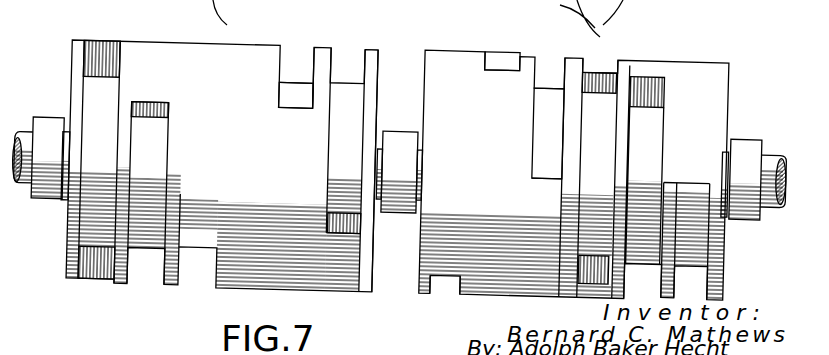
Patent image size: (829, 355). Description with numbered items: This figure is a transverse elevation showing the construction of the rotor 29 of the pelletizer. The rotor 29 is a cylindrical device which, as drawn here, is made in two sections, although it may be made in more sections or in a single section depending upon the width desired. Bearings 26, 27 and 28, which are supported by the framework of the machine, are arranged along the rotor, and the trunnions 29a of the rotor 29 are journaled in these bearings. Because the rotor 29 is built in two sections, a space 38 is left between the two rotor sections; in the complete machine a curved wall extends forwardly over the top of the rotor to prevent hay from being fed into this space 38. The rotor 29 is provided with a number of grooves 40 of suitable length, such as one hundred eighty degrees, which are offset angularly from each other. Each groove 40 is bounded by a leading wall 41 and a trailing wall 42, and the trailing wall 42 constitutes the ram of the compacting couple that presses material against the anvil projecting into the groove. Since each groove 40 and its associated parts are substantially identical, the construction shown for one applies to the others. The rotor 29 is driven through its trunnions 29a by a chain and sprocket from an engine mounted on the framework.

The bearing 26 is at (43, 128).
The bearing 27 is at (394, 138).
The bearing 28 is at (742, 135).
The rotor 29 is at (712, 38).
The trunnions 29a is at (28, 195).
The space 38 is at (397, 70).
The grooves 40 is at (337, 65).
The leading wall 41 is at (102, 263).
The trailing wall 42 is at (104, 63).